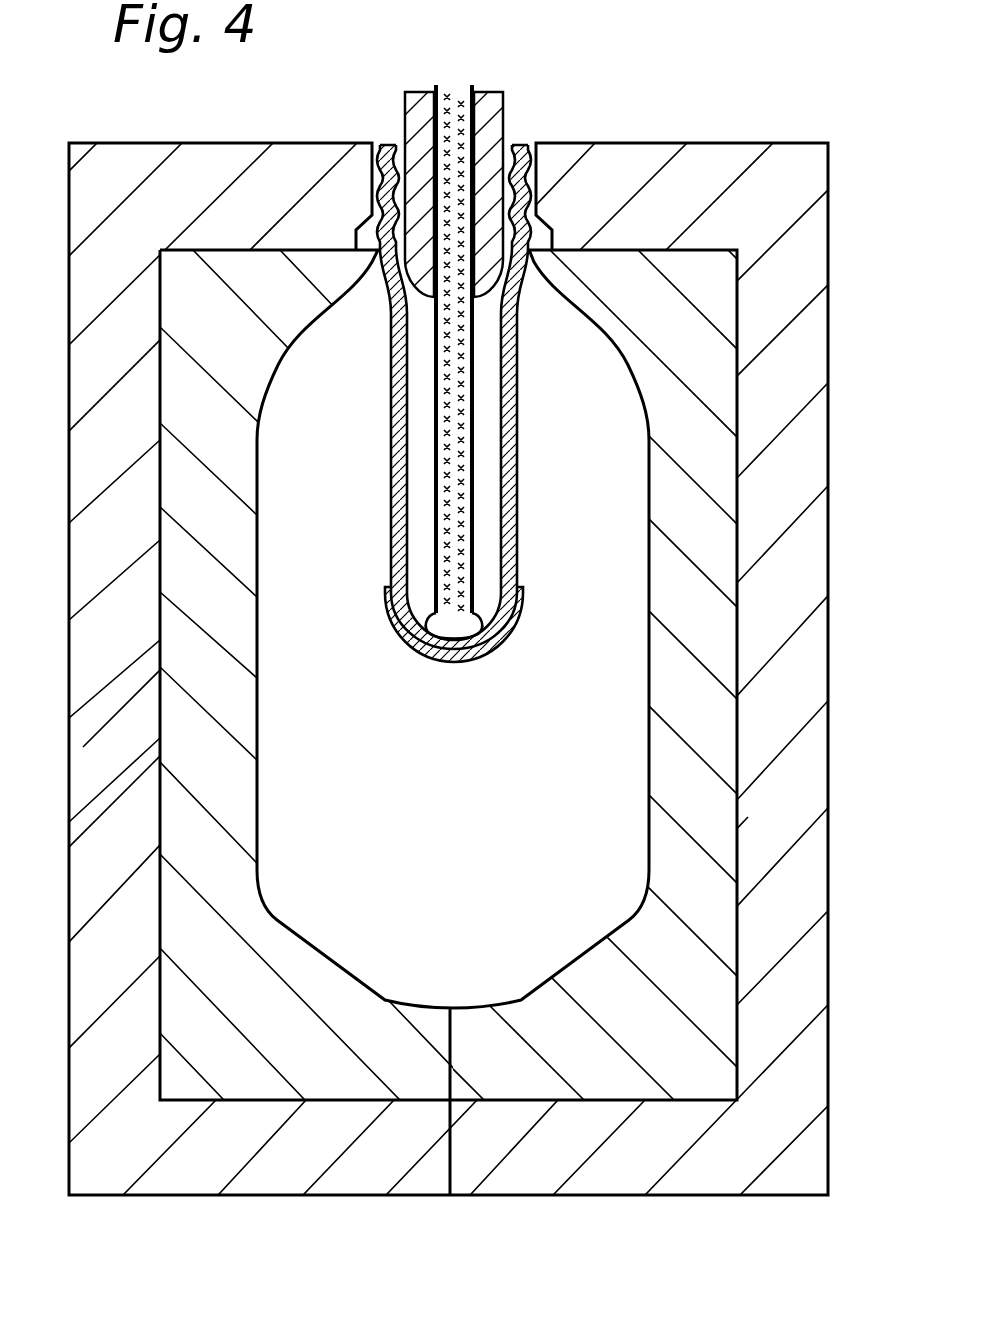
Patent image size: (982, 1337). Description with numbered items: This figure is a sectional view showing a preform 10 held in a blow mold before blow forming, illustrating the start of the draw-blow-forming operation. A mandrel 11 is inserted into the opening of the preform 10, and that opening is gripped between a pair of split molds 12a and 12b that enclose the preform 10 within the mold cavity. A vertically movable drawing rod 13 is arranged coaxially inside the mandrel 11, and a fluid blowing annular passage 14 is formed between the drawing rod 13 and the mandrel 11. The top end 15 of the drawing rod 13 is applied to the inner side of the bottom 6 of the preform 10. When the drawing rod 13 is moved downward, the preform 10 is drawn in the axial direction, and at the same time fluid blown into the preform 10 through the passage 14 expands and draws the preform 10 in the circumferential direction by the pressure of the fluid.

The bottom 6 is at (450, 665).
The preform 10 is at (486, 442).
The mandrel 11 is at (500, 122).
The split mold 12a is at (722, 583).
The split mold 12b is at (232, 573).
The drawing rod 13 is at (454, 100).
The fluid blowing annular passage 14 is at (512, 343).
The top end 15 is at (477, 623).